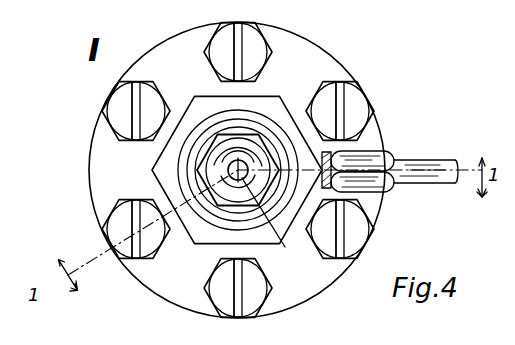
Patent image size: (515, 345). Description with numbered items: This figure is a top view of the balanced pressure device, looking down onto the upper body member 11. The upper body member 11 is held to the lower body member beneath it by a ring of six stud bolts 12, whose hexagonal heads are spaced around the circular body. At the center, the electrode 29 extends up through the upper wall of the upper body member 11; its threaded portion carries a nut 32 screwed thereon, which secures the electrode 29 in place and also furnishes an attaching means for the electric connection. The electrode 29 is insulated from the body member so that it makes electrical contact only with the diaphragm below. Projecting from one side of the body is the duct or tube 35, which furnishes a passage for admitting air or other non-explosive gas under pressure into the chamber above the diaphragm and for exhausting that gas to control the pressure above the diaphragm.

The upper body member 11 is at (169, 273).
The stud bolts 12 is at (120, 104).
The electrode 29 is at (338, 283).
The nut 32 is at (246, 182).
The duct or tube 35 is at (395, 161).